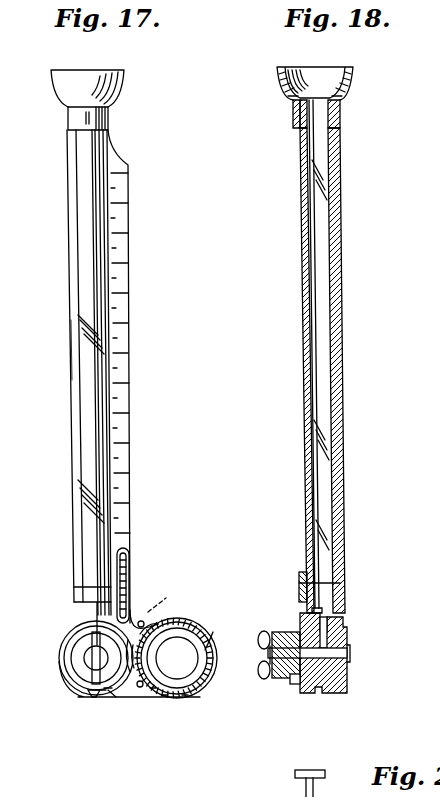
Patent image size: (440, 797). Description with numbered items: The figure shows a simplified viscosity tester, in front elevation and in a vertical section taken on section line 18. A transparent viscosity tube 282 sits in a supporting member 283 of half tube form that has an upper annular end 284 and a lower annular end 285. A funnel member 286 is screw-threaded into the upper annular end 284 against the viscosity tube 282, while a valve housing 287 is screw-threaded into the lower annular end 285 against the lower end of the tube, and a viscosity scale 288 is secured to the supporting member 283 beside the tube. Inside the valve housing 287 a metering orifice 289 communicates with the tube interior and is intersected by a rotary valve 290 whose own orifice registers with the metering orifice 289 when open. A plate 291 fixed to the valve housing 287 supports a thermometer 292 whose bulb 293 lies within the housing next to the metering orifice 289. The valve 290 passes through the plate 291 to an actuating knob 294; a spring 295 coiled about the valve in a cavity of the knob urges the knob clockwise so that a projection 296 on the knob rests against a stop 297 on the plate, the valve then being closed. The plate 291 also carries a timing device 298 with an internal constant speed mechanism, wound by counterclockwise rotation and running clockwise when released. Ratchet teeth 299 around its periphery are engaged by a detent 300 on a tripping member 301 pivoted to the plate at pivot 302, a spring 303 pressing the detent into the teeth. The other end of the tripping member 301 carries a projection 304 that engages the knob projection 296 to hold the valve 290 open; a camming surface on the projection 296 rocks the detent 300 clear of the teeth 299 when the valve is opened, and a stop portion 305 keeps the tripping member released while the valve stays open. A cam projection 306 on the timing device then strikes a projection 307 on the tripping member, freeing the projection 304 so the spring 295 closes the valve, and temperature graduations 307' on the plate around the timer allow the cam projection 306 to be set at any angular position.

In FIG. 17, the section line 18— 18 is at (87, 110).
In FIG. 17, the transparent viscosity tube 282 is at (83, 298).
In FIG. 18, the transparent viscosity tube 282 is at (309, 298).
In FIG. 17, the supporting member 283 is at (71, 395).
In FIG. 18, the supporting member 283 is at (345, 364).
In FIG. 17, the upper annular end 284 is at (70, 119).
In FIG. 18, the upper annular end 284 is at (296, 125).
In FIG. 17, the lower annular end 285 is at (83, 587).
In FIG. 18, the lower annular end 285 is at (300, 592).
In FIG. 17, the funnel member 286 is at (122, 86).
In FIG. 18, the funnel member 286 is at (355, 82).
In FIG. 18, the valve housing 287 is at (347, 640).
In FIG. 17, the viscosity scale 288 is at (129, 402).
In FIG. 18, the metering orifice 289 is at (347, 628).
In FIG. 18, the rotary valve 290 is at (350, 656).
In FIG. 18, the plate 291 is at (302, 700).
In FIG. 17, the thermometer 292 is at (129, 582).
In FIG. 18, the bulb 293 is at (310, 612).
In FIG. 17, the actuating knob 294 is at (81, 664).
In FIG. 18, the actuating knob 294 is at (273, 680).
In FIG. 18, the spring 295 is at (288, 686).
In FIG. 17, the projection 296 is at (105, 699).
In FIG. 18, the projection 296 is at (295, 688).
In FIG. 17, the stop 297 is at (82, 696).
In FIG. 17, the timing device 298 is at (190, 660).
In FIG. 17, the ratchet teeth 299 is at (185, 699).
In FIG. 17, the detent 300 is at (180, 624).
In FIG. 17, the tripping member 301 is at (108, 697).
In FIG. 17, the pivot 302 is at (163, 600).
In FIG. 17, the spring 303 is at (150, 693).
In FIG. 17, the projection 304 is at (114, 699).
In FIG. 17, the stop portion 305 is at (92, 697).
In FIG. 17, the cam projection 306 is at (165, 699).
In FIG. 17, the projection 307 is at (175, 609).
In FIG. 17, the temperature graduations 307' is at (226, 641).